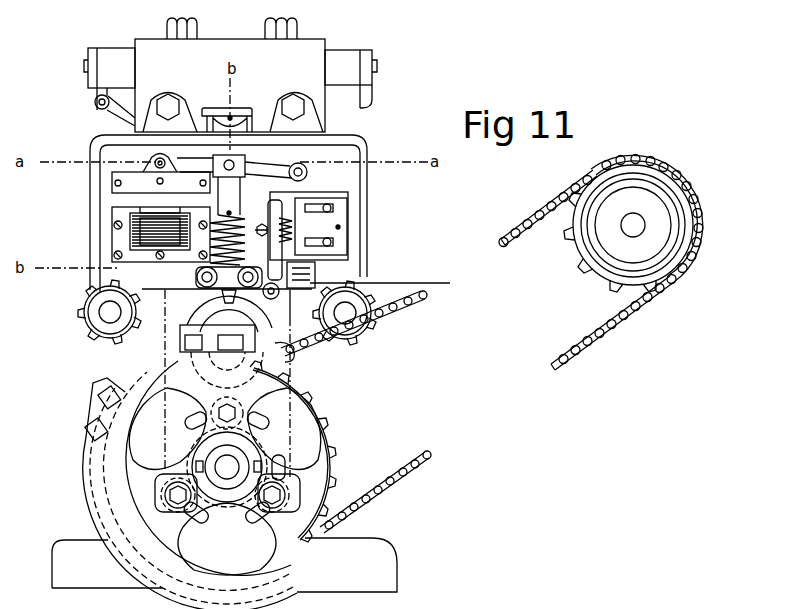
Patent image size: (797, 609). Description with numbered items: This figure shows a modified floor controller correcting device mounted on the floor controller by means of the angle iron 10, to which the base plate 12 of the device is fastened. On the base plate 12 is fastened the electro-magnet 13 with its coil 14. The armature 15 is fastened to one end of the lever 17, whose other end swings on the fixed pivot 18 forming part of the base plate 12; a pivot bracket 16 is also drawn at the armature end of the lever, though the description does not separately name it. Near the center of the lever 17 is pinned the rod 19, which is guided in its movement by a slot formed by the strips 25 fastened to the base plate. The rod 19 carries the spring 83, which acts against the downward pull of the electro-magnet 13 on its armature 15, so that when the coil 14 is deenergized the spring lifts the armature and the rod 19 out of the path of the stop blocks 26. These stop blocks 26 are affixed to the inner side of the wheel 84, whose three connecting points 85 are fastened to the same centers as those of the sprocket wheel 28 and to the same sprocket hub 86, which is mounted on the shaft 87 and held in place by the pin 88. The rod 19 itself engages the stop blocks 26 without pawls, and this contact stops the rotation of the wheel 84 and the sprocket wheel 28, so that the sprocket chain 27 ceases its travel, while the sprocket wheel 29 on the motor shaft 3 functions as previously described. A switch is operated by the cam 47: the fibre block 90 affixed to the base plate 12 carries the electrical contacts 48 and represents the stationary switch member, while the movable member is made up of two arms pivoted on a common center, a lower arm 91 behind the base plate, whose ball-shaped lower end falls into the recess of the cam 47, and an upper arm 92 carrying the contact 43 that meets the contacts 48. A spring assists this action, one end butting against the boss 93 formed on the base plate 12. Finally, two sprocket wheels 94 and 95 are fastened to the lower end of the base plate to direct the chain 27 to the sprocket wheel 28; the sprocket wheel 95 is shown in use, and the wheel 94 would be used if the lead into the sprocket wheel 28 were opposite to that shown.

The angle iron 10 is at (310, 45).
The lower arm 91 is at (232, 118).
The base plate 12 is at (365, 197).
The pivot bracket 16 is at (155, 163).
The armature 15 is at (112, 185).
The lever 17 is at (275, 165).
The fixed pivot 18 is at (300, 170).
The rod 19 is at (231, 213).
The spring 83 is at (213, 248).
The strips 25 is at (196, 277).
The coil 14 is at (112, 218).
The electro-magnet 13 is at (118, 238).
The contact 43 is at (288, 202).
The fibre block 90 is at (340, 250).
The electrical contacts 48 is at (333, 240).
The upper arm 92 is at (280, 250).
The boss 93 is at (315, 277).
The sprocket wheel 94 is at (84, 312).
The sprocket wheel 95 is at (356, 304).
The cam 47 is at (265, 360).
The stop blocks 26 is at (88, 387).
The wheel 84 is at (93, 470).
The sprocket wheel 28 is at (300, 430).
The sprocket hub 86 is at (240, 432).
The shaft 87 is at (240, 467).
The pin 88 is at (285, 475).
The connecting points 85 is at (165, 500).
The motor shaft 3 is at (637, 233).
The sprocket wheel 29 is at (578, 265).
The sprocket chain 27 is at (572, 340).